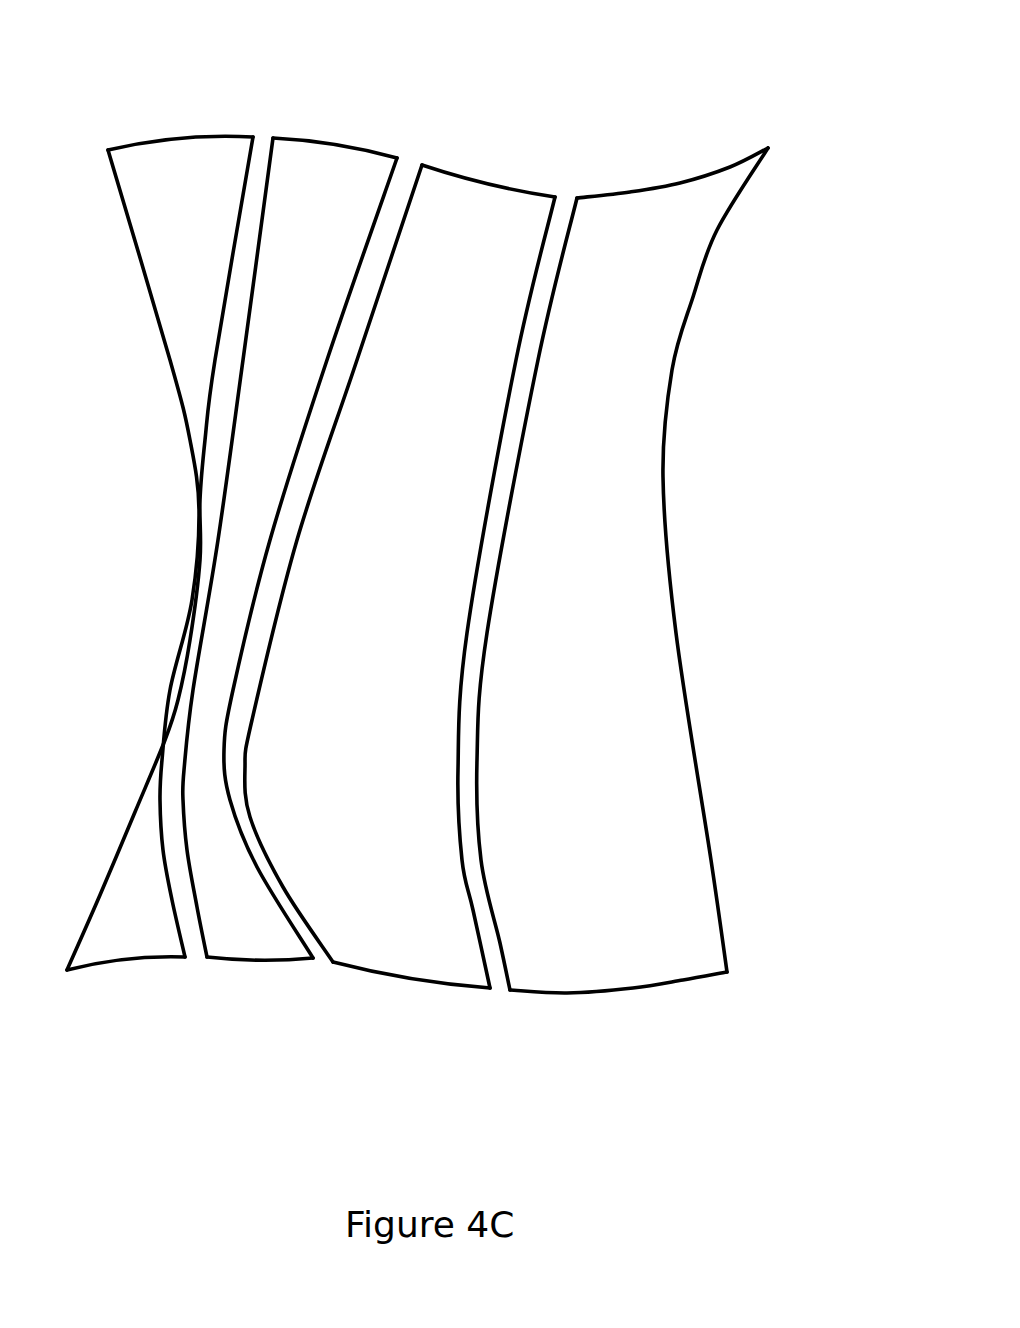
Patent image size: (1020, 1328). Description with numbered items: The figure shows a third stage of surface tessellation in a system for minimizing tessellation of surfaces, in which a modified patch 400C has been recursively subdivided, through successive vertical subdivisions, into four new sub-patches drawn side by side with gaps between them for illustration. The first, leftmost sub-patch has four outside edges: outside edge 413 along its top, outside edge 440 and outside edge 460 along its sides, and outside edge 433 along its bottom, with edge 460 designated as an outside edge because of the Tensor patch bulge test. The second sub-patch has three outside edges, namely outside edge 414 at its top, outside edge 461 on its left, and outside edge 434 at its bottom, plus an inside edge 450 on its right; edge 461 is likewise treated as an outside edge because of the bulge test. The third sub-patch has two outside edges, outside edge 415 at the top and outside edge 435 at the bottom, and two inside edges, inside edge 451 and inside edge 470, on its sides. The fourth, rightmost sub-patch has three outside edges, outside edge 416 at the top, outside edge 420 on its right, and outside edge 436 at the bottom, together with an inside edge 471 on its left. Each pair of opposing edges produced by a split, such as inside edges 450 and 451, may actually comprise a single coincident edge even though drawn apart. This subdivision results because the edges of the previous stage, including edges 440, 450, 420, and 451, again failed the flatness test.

The modified patch 400C is at (435, 596).
The outside edge 413 is at (158, 138).
The outside edge 414 is at (362, 146).
The outside edge 415 is at (500, 184).
The outside edge 416 is at (700, 178).
The outside edge 420 is at (665, 478).
The outside edge 433 is at (83, 972).
The outside edge 434 is at (255, 960).
The outside edge 435 is at (410, 978).
The outside edge 436 is at (683, 985).
The outside edge 440 is at (190, 463).
The inside edge 450 is at (305, 375).
The inside edge 451 is at (358, 370).
The outside edge 460 is at (242, 202).
The outside edge 461 is at (263, 233).
The inside edge 470 is at (459, 655).
The inside edge 471 is at (486, 657).